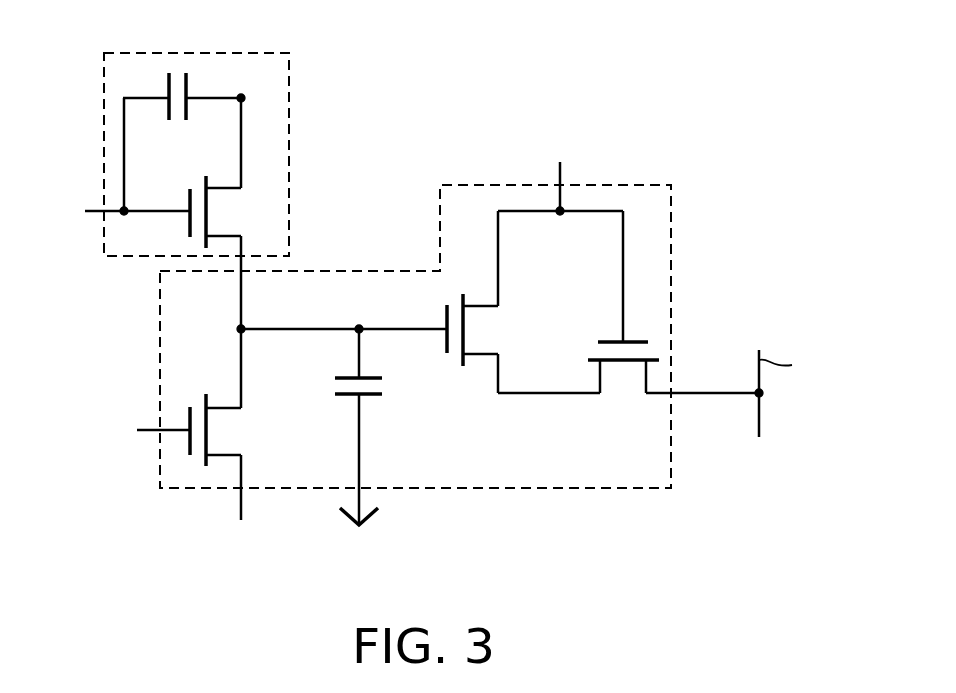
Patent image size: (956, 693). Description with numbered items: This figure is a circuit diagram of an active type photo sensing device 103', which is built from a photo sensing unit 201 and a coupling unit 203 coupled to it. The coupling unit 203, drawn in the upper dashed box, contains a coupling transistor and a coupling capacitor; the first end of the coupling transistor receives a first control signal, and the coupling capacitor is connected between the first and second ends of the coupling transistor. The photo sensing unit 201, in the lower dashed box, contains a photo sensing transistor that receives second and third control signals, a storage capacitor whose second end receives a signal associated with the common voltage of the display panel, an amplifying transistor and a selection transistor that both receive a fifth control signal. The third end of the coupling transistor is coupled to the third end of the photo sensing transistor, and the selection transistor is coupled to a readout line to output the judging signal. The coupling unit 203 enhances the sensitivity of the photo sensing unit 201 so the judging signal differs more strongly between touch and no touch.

The active type photo sensing device 103' is at (437, 292).
The coupling unit 203 is at (262, 52).
The photo sensing unit 201 is at (643, 185).